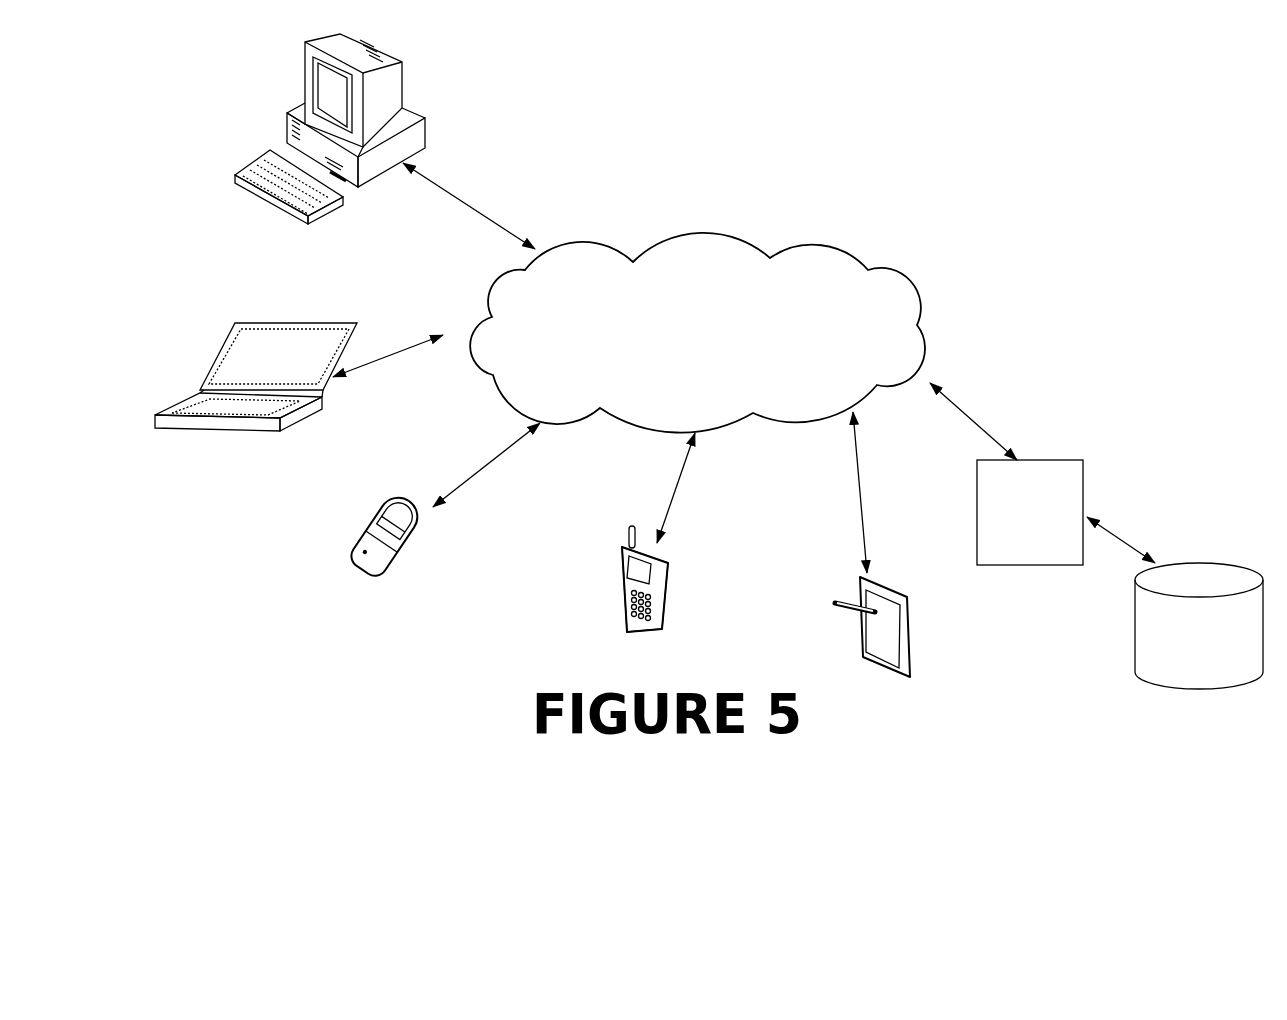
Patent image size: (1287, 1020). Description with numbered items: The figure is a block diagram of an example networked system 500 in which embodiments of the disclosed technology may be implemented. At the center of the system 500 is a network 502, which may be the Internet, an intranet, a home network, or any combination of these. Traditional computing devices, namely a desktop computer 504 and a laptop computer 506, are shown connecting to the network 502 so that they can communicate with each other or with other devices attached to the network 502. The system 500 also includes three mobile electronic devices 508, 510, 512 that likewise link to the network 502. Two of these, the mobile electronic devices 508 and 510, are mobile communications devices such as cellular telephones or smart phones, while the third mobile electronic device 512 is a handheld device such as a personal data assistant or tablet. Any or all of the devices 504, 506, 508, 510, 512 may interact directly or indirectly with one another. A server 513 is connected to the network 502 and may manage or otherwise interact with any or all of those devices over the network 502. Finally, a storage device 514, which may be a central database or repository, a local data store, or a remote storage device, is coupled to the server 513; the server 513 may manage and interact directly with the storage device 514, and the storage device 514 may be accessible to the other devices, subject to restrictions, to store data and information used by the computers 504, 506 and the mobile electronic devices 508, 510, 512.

The networked system 500 is at (945, 88).
The network 502 is at (675, 383).
The desktop computer 504 is at (385, 141).
The laptop computer 506 is at (299, 377).
The mobile electronic device 508 is at (440, 501).
The mobile electronic device 510 is at (640, 532).
The mobile electronic device 512 is at (880, 544).
The server 513 is at (1006, 474).
The storage device 514 is at (1180, 655).